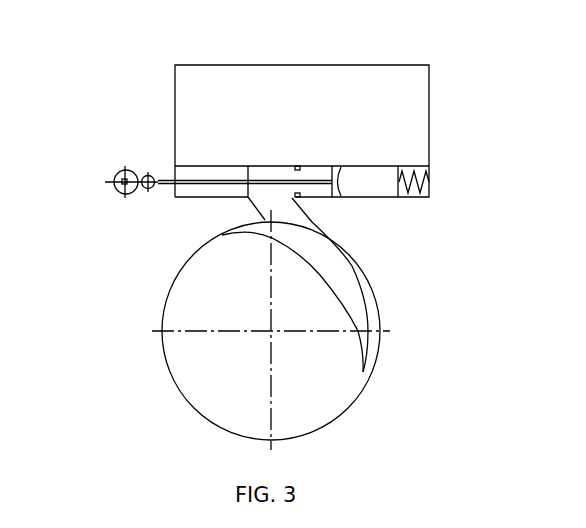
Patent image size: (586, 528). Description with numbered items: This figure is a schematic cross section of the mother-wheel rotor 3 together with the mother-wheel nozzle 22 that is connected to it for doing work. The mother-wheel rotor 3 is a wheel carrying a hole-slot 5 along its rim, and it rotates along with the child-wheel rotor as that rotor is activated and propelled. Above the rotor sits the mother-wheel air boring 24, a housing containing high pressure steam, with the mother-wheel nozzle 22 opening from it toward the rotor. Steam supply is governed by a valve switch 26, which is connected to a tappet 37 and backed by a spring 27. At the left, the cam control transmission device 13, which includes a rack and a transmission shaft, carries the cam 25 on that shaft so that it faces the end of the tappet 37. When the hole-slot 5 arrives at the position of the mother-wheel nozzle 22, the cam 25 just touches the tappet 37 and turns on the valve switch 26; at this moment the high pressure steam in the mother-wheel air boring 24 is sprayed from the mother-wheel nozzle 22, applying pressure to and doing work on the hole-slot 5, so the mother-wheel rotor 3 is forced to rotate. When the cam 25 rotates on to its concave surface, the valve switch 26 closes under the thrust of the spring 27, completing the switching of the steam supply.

The mother-wheel rotor 3 is at (303, 317).
The hole-slot 5 is at (340, 272).
The cam control transmission device 13 is at (123, 187).
The mother-wheel nozzle 22 is at (287, 212).
The mother-wheel air boring 24 is at (196, 118).
The cam 25 is at (125, 180).
The valve switch 26 is at (382, 165).
The spring 27 is at (420, 182).
The tappet 37 is at (306, 178).